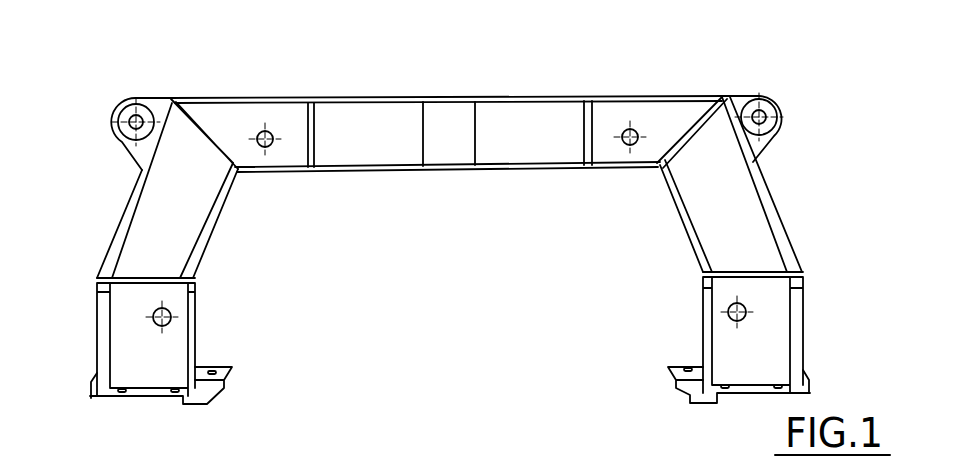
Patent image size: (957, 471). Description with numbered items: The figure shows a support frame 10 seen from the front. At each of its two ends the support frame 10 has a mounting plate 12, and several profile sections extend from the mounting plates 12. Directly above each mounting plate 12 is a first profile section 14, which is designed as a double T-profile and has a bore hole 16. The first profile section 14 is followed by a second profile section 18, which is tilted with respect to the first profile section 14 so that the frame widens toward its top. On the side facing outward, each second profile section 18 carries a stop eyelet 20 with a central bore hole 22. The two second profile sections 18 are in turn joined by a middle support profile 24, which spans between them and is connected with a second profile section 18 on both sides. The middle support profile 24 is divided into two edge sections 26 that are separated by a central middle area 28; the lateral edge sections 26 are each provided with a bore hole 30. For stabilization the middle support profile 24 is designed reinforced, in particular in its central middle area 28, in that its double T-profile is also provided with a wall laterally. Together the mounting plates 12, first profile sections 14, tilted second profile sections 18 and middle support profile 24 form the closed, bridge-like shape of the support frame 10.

The support frame 10 is at (563, 98).
The mounting plate 12 is at (238, 362).
The first profile section 14 is at (178, 299).
The bore hole 16 is at (167, 323).
The second profile section 18 is at (197, 183).
The stop eyelet 20 is at (137, 151).
The central bore hole 22 is at (122, 113).
The middle support profile 24 is at (343, 115).
The edge section 26 is at (293, 153).
The central middle area 28 is at (457, 155).
The bore hole 30 is at (255, 128).